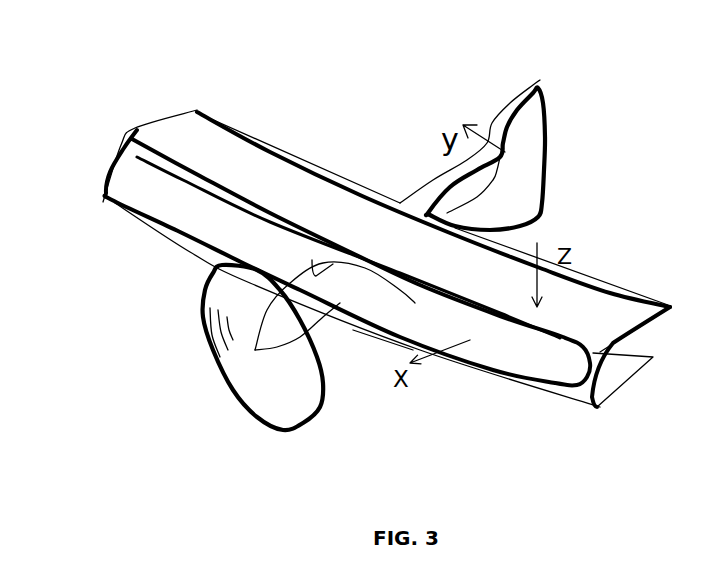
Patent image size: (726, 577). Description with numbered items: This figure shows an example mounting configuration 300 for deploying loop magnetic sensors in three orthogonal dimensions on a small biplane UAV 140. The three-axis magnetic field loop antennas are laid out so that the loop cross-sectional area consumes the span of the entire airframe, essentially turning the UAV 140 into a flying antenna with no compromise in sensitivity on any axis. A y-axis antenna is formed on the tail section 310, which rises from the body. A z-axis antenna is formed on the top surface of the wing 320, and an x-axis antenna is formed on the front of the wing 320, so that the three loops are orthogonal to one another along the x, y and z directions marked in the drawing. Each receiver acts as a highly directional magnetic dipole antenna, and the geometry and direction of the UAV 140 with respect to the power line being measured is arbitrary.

The mounting configuration 300 is at (102, 85).
The UAV 140 is at (545, 207).
The tail section 310 is at (557, 138).
The wing 320 is at (625, 387).